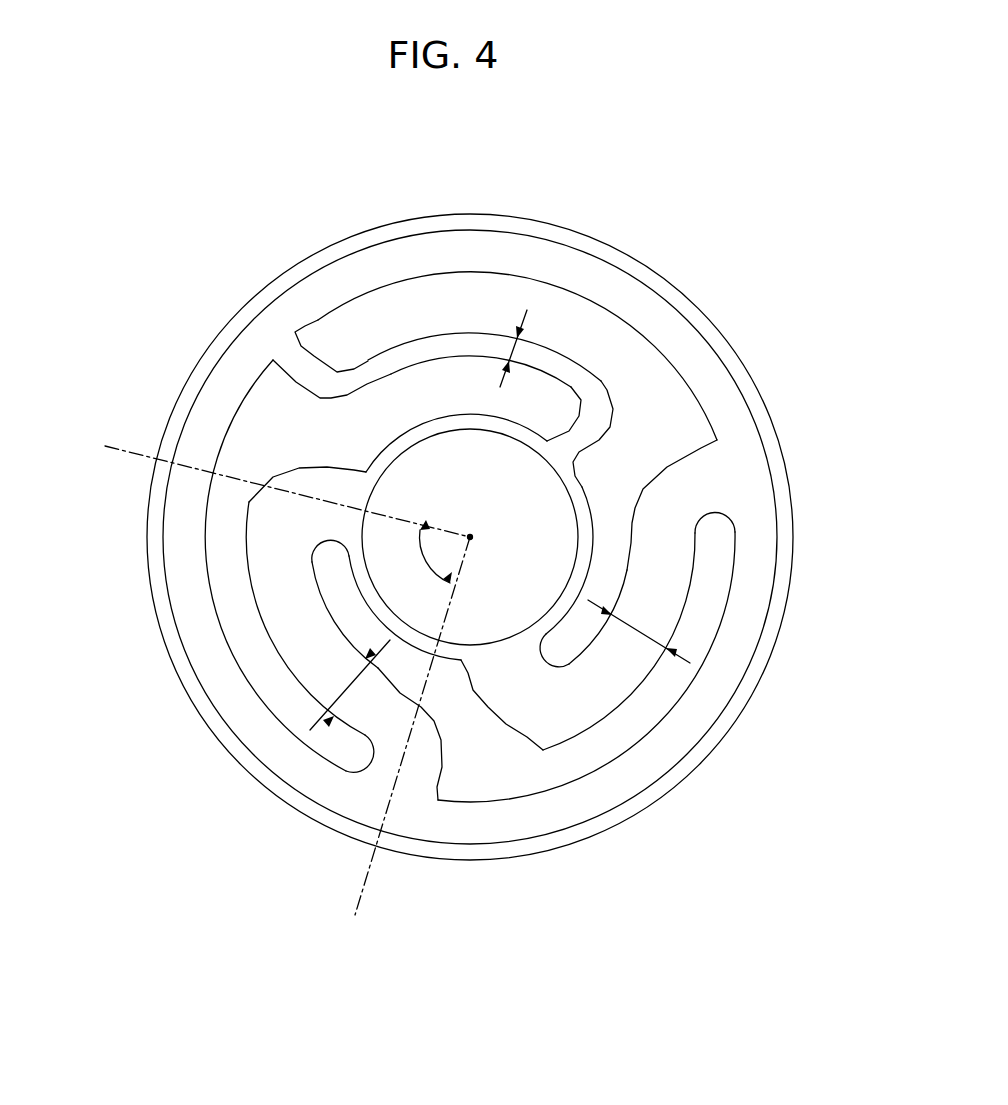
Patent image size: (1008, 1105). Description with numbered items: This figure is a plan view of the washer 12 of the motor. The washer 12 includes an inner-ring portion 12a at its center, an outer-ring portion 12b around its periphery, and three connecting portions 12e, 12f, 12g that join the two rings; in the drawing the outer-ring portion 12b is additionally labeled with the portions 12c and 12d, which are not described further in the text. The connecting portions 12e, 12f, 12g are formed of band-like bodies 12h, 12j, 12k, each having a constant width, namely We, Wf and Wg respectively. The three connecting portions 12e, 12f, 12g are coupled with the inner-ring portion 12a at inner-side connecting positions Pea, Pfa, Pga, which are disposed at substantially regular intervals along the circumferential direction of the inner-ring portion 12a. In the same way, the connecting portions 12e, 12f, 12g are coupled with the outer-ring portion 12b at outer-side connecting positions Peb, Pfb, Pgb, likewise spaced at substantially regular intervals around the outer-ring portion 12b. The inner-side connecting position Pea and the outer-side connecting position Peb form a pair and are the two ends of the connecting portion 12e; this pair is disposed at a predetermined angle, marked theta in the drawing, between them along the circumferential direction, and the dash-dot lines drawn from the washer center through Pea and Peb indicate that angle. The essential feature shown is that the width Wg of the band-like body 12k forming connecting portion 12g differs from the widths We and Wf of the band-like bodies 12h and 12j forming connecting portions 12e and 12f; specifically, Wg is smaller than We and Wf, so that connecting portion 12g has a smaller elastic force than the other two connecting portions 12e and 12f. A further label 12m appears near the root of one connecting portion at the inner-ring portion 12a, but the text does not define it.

The washer 12 is at (612, 250).
The inner-ring portion 12a is at (563, 450).
The outer-ring portion 12b is at (160, 203).
The inner rim portion 12c is at (257, 345).
The outer rim portion 12d is at (223, 333).
The connecting portion 12e is at (248, 651).
The connecting portion 12f is at (710, 595).
The connecting portion 12g is at (437, 284).
The band-like body 12h is at (275, 608).
The band-like body 12j is at (677, 542).
The band-like body 12k is at (407, 355).
The connecting root portion 12m is at (547, 630).
The inner-side connecting position Pea is at (353, 500).
The outer-side connecting position Peb is at (415, 790).
The inner-side connecting position Pfa is at (507, 657).
The outer-side connecting position Pfb is at (723, 478).
The inner-side connecting position Pga is at (605, 390).
The outer-side connecting position Pgb is at (288, 343).
The width We is at (347, 685).
The width Wf is at (639, 631).
The width Wg is at (491, 355).